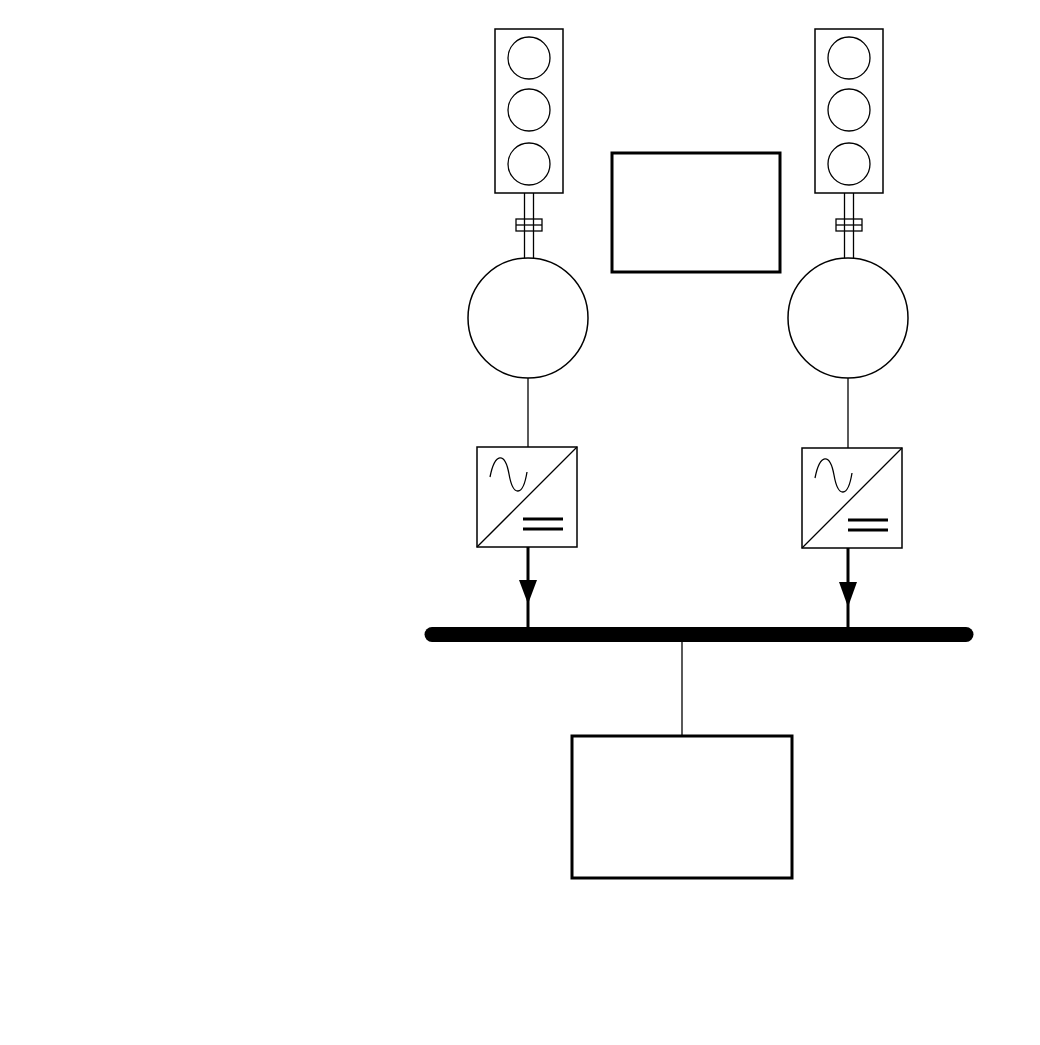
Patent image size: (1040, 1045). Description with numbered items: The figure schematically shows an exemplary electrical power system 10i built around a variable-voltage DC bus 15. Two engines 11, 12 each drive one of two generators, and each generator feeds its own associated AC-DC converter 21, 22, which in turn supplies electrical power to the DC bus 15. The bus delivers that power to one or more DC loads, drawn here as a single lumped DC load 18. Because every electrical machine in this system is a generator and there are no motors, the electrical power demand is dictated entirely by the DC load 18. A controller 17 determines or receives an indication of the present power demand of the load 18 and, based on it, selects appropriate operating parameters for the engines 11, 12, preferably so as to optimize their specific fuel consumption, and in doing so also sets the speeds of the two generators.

The electrical power system 10i is at (250, 240).
The engine 11 is at (495, 45).
The engine 12 is at (884, 51).
The variable-voltage DC bus 15 is at (427, 637).
The controller 17 is at (672, 227).
The lumped DC load 18 is at (572, 778).
The AC-DC converter 21 is at (477, 465).
The AC-DC converter 22 is at (801, 463).